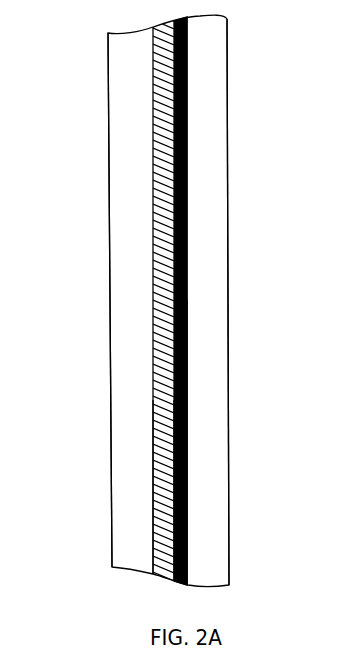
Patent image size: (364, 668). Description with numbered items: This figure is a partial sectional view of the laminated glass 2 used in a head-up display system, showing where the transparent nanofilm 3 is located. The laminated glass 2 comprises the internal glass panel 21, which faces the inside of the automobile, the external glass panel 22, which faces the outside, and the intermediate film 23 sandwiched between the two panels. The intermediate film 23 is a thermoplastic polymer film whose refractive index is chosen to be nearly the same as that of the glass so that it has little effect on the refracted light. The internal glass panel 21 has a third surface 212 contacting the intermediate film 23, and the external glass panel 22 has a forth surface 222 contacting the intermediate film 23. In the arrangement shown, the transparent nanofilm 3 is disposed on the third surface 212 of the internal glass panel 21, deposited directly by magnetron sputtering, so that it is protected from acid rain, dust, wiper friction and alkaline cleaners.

The laminated glass 2 is at (245, 545).
The internal glass panel 21 is at (205, 114).
The third surface 212 is at (187, 238).
The external glass panel 22 is at (125, 140).
The forth surface 222 is at (153, 290).
The intermediate film 23 is at (155, 448).
The transparent nanofilm 3 is at (187, 410).